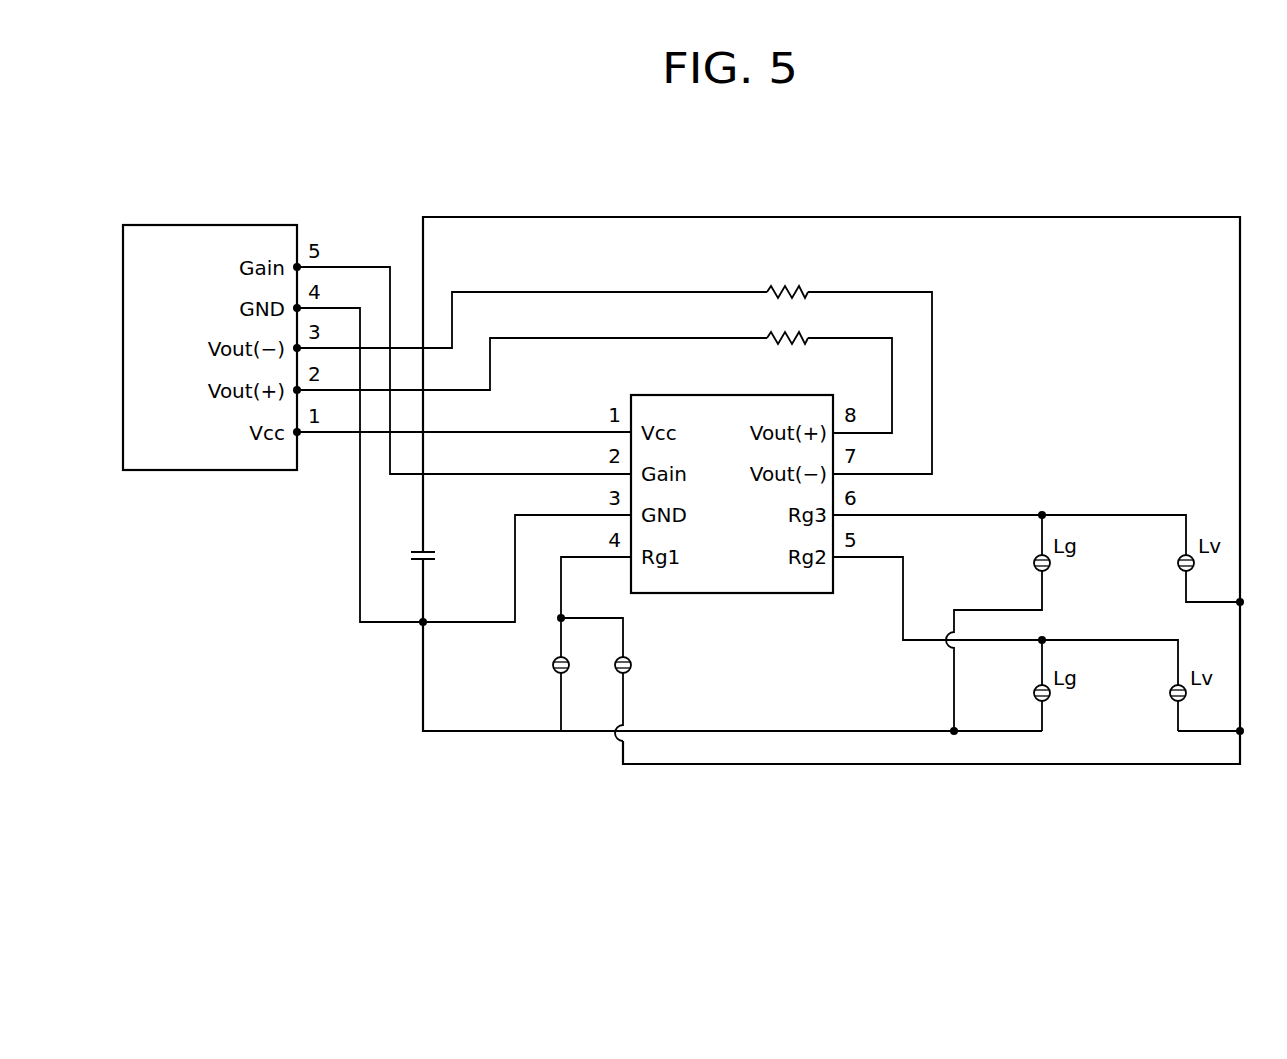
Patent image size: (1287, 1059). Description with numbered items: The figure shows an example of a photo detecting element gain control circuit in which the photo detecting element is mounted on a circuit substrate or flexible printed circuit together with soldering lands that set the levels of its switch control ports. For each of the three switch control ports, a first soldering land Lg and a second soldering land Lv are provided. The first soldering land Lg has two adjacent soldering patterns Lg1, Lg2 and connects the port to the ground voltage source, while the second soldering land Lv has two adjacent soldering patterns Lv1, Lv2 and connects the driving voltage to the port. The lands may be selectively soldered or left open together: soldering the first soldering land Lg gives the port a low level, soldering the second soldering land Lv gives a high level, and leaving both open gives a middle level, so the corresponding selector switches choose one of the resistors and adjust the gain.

The soldering pattern Lg1 is at (1035, 559).
The soldering pattern Lg2 is at (1035, 567).
The soldering pattern Lv1 is at (1179, 559).
The soldering pattern Lv2 is at (1179, 567).
The first soldering land Lg is at (574, 654).
The second soldering land Lv is at (636, 654).